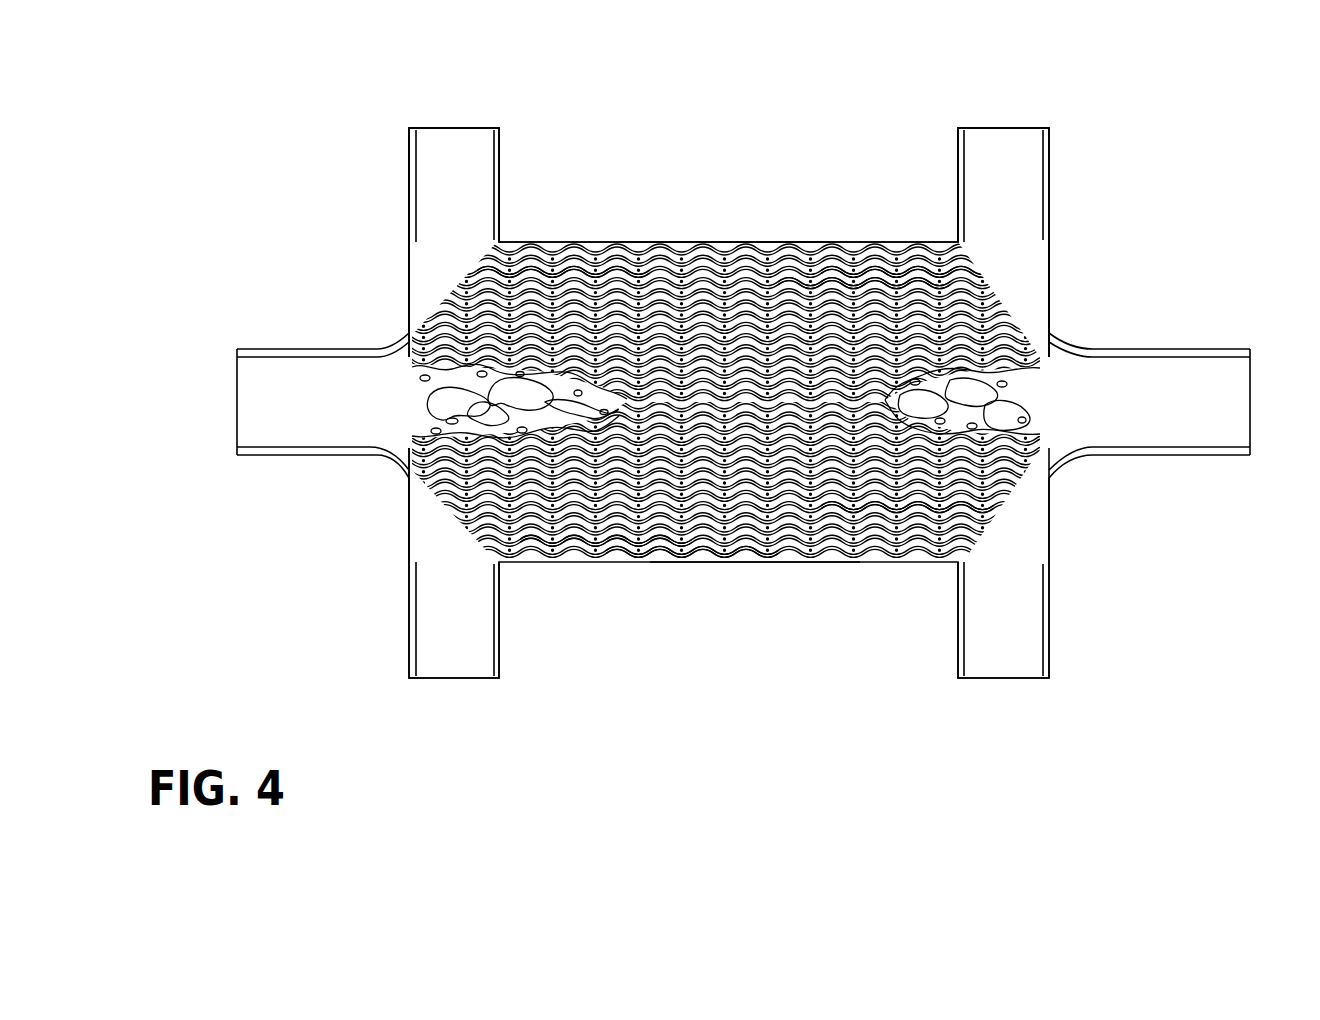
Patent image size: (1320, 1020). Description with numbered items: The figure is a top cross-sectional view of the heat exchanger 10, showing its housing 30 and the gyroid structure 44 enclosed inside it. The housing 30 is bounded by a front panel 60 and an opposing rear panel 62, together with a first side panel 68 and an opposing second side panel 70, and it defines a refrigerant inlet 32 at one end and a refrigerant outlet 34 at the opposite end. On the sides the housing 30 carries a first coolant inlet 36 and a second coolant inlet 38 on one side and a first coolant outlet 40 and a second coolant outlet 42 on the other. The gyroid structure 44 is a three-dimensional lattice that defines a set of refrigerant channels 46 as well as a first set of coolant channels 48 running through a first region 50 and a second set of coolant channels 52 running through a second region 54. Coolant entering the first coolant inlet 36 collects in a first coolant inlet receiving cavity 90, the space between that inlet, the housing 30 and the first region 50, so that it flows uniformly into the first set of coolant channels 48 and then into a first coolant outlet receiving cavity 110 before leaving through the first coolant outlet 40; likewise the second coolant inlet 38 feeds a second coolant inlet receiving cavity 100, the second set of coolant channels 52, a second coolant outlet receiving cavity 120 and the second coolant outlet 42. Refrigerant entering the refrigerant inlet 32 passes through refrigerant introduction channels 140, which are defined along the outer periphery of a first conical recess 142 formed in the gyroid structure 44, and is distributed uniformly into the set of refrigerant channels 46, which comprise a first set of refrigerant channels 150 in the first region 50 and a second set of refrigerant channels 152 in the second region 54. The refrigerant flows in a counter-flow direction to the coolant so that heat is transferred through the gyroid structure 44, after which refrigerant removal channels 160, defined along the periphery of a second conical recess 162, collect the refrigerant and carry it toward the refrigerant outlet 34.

The heat exchanger 10 is at (620, 158).
The housing 30 is at (777, 243).
The refrigerant inlet 32 is at (1153, 377).
The refrigerant outlet 34 is at (292, 380).
The first coolant inlet 36 is at (432, 173).
The second coolant inlet 38 is at (480, 633).
The first coolant outlet 40 is at (1023, 170).
The second coolant outlet 42 is at (1025, 613).
The gyroid structure 44 is at (677, 263).
The set of refrigerant channels 46 is at (838, 450).
The first set of coolant channels 48 is at (565, 277).
The first region 50 is at (845, 280).
The second set of coolant channels 52 is at (594, 540).
The second region 54 is at (660, 547).
The front panel 60 is at (1052, 287).
The rear panel 62 is at (408, 523).
The first side panel 68 is at (728, 242).
The second side panel 70 is at (760, 567).
The first coolant inlet receiving cavity 90 is at (440, 283).
The second coolant inlet receiving cavity 100 is at (440, 537).
The first coolant outlet receiving cavity 110 is at (1010, 282).
The second coolant outlet receiving cavity 120 is at (1027, 530).
The refrigerant introduction channels 140 is at (1040, 377).
The first conical recess 142 is at (1012, 430).
The first set of refrigerant channels 150 is at (890, 280).
The second set of refrigerant channels 152 is at (900, 505).
The refrigerant removal channels 160 is at (427, 410).
The second conical recess 162 is at (417, 383).